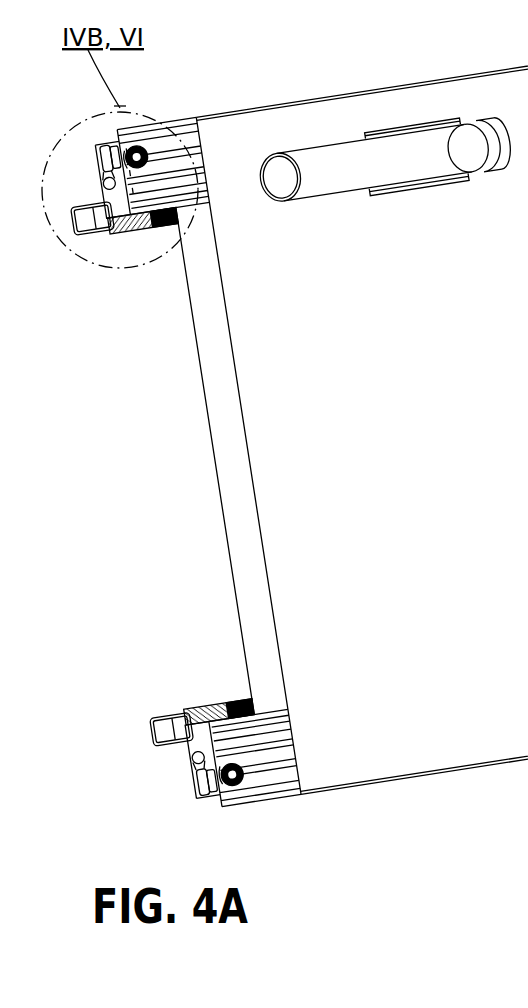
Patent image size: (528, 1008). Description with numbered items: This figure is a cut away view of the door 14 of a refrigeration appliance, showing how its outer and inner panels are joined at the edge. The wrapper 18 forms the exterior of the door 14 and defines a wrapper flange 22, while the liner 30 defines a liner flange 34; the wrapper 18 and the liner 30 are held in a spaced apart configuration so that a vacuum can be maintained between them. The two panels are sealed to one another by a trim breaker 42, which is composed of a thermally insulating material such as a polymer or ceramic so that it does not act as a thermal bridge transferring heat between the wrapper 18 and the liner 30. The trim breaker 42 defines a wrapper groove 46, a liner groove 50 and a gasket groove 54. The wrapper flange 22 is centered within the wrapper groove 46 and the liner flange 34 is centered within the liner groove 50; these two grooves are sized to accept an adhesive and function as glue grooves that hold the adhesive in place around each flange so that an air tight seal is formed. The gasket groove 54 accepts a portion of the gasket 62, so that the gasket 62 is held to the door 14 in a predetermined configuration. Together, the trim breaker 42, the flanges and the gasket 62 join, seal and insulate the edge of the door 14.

The door 14 is at (302, 70).
The wrapper 18 is at (458, 82).
The wrapper flange 22 is at (173, 150).
The liner 30 is at (212, 447).
The liner flange 34 is at (190, 220).
The trim breaker 42 is at (130, 240).
The wrapper groove 46 is at (220, 804).
The liner groove 50 is at (247, 693).
The gasket groove 54 is at (118, 138).
The gasket 62 is at (202, 773).